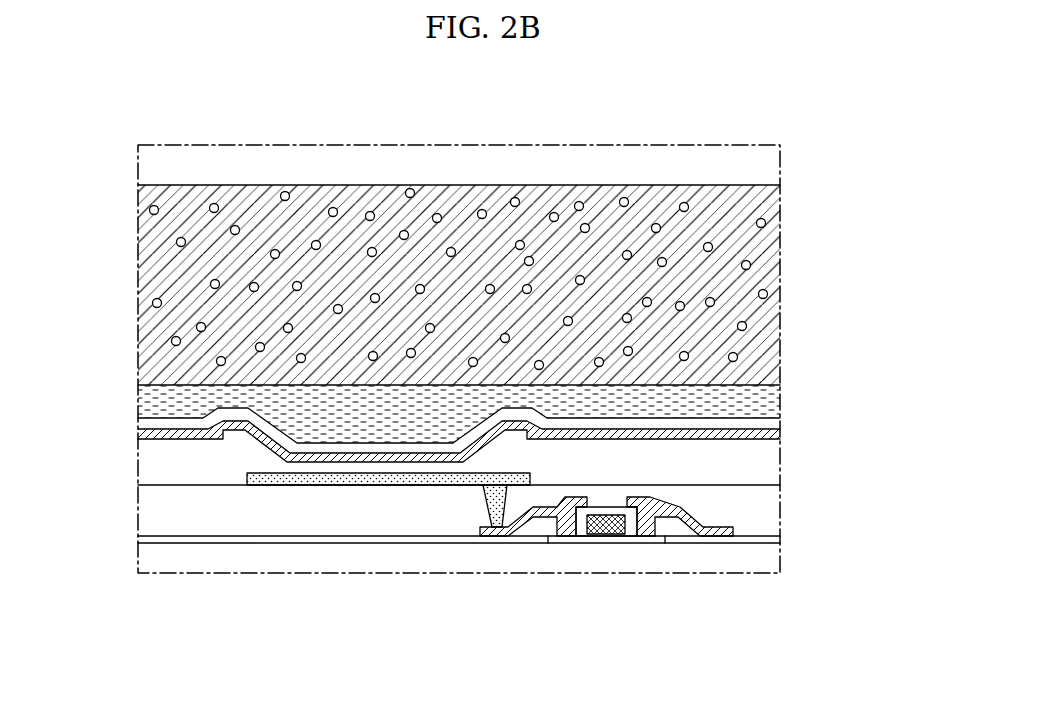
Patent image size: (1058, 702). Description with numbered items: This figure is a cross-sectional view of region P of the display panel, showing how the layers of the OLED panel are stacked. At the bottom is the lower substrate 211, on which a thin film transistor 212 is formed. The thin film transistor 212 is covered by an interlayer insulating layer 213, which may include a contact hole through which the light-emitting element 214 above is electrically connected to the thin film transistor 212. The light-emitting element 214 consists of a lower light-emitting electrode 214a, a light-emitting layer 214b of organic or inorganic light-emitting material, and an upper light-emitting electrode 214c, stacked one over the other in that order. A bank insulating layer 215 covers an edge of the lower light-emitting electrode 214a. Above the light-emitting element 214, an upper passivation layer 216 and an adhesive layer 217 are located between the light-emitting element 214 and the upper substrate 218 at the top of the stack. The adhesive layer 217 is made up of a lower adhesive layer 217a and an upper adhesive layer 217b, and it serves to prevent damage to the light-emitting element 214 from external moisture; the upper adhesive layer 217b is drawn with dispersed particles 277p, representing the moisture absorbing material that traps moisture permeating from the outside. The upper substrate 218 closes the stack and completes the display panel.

The region P is at (139, 144).
The lower substrate 211 is at (772, 558).
The thin film transistor 212 is at (596, 537).
The interlayer insulating layer 213 is at (772, 508).
The light-emitting element 214 is at (459, 555).
The lower light-emitting electrode 214a is at (373, 478).
The light-emitting layer 214b is at (335, 468).
The upper light-emitting electrode 214c is at (268, 446).
The bank insulating layer 215 is at (772, 462).
The upper passivation layer 216 is at (153, 423).
The adhesive layer 217 is at (487, 314).
The lower adhesive layer 217a is at (495, 414).
The upper adhesive layer 217b is at (460, 285).
The scattering particles 277p is at (197, 323).
The upper substrate 218 is at (771, 156).